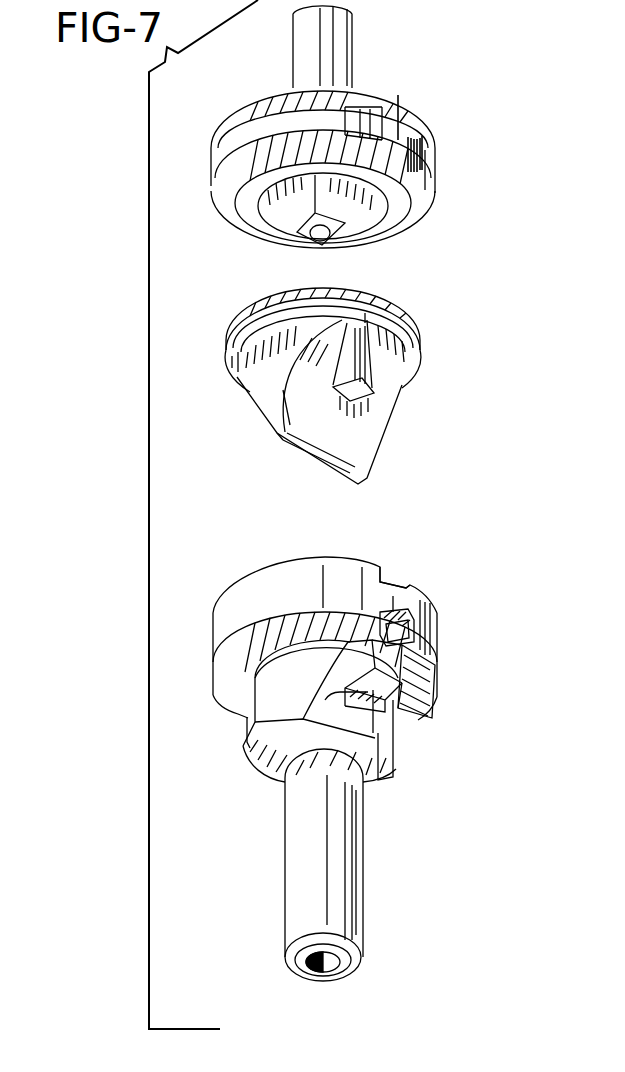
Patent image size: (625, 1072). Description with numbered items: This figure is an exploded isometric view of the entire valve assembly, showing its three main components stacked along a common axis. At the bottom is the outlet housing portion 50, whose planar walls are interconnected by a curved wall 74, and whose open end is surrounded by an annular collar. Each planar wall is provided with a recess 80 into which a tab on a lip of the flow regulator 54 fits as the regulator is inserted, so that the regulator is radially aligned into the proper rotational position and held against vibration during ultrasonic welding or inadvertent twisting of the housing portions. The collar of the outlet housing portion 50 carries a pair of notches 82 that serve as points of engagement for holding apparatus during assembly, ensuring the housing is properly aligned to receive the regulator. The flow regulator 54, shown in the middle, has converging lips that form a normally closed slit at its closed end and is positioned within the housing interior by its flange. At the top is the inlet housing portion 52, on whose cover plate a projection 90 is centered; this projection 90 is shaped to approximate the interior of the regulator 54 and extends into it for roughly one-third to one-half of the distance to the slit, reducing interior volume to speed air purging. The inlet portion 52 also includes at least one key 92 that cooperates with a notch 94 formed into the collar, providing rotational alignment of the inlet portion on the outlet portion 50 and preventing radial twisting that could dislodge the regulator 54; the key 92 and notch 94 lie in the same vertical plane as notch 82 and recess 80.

The outlet housing portion 50 is at (387, 803).
The inlet housing portion 52 is at (377, 62).
The flow regulator 54 is at (395, 418).
The curved wall 74 is at (268, 690).
The recess 80 is at (413, 693).
The notch 82 is at (413, 630).
The projection 90 is at (343, 218).
The key 92 is at (400, 130).
The notch 94 is at (407, 589).